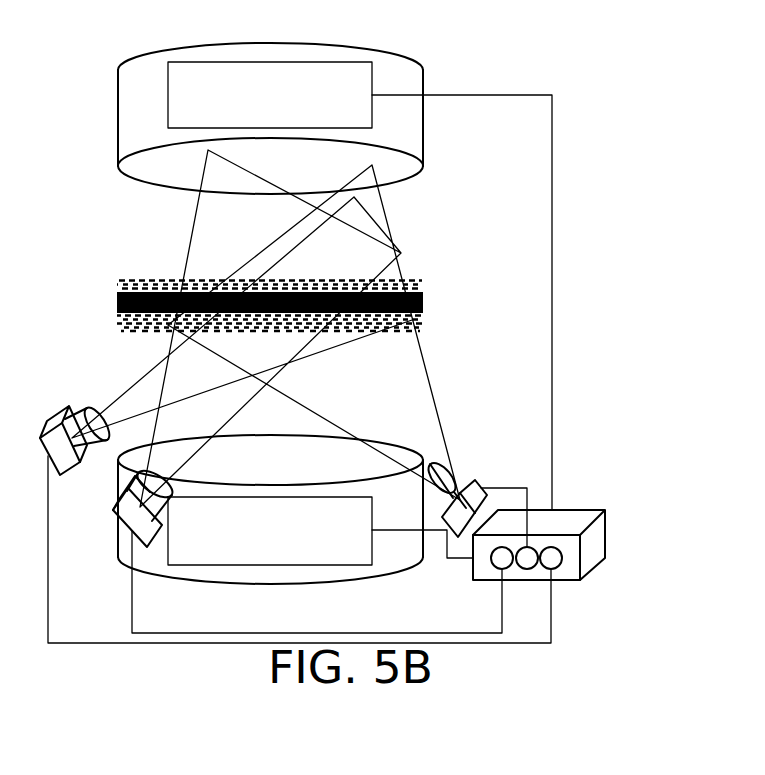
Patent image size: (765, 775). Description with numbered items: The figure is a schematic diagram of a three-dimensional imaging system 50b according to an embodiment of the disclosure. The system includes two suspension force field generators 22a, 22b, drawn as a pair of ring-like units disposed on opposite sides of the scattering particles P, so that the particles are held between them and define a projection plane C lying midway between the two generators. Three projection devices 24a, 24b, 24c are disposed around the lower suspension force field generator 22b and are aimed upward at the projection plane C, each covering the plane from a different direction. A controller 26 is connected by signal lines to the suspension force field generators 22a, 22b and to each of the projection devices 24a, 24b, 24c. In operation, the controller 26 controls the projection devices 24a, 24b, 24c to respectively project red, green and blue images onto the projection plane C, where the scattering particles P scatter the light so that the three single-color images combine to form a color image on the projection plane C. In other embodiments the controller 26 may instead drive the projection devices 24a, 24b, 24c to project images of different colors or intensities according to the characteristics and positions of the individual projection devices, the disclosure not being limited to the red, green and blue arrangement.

The suspension force field generator 22a is at (236, 60).
The suspension force field generator 22b is at (233, 568).
The projection device 24a is at (465, 475).
The projection device 24b is at (58, 413).
The projection device 24c is at (118, 508).
The controller 26 is at (607, 533).
The scattering particles P is at (152, 278).
The projection plane C is at (117, 303).
The three-dimensional imaging system 50b is at (667, 644).